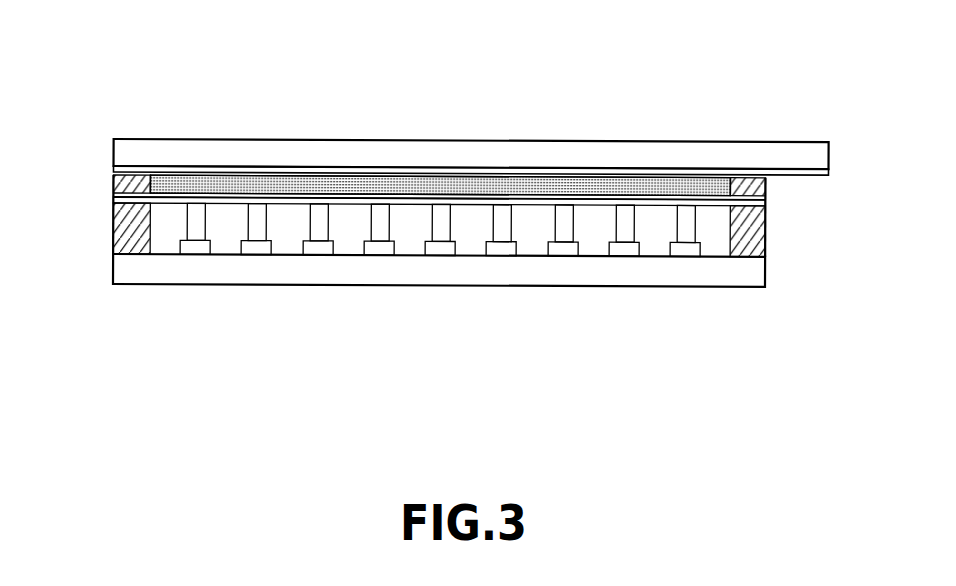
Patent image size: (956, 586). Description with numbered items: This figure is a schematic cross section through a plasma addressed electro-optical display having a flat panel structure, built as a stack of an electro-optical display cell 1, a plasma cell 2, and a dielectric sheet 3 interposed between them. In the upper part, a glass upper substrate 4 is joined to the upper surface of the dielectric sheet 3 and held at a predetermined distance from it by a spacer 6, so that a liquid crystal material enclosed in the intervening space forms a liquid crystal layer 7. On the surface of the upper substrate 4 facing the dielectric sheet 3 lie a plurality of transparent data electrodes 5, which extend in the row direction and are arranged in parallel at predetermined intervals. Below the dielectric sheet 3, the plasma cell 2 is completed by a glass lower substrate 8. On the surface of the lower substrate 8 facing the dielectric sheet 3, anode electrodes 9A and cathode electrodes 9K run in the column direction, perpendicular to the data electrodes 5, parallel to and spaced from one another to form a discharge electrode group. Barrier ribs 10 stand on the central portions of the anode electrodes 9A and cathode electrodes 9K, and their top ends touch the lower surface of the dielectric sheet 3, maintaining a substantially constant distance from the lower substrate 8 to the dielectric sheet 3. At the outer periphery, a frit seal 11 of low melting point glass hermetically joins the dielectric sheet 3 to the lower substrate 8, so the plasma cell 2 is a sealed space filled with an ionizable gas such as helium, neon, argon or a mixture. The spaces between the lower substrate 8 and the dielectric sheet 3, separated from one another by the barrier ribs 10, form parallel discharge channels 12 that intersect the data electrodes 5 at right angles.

The electro-optical display cell 1 is at (95, 163).
The plasma cell 2 is at (95, 245).
The dielectric sheet 3 is at (752, 203).
The glass substrate (upper substrate) 4 is at (133, 157).
The data electrodes 5 is at (793, 172).
The spacer 6 is at (755, 183).
The liquid crystal layer 7 is at (712, 185).
The glass substrate (lower substrate) 8 is at (738, 272).
The anode electrodes 9A is at (195, 250).
The cathode electrodes 9K is at (257, 250).
The barrier ribs 10 is at (192, 215).
The frit seal 11 is at (752, 242).
The discharge channels 12 is at (225, 217).